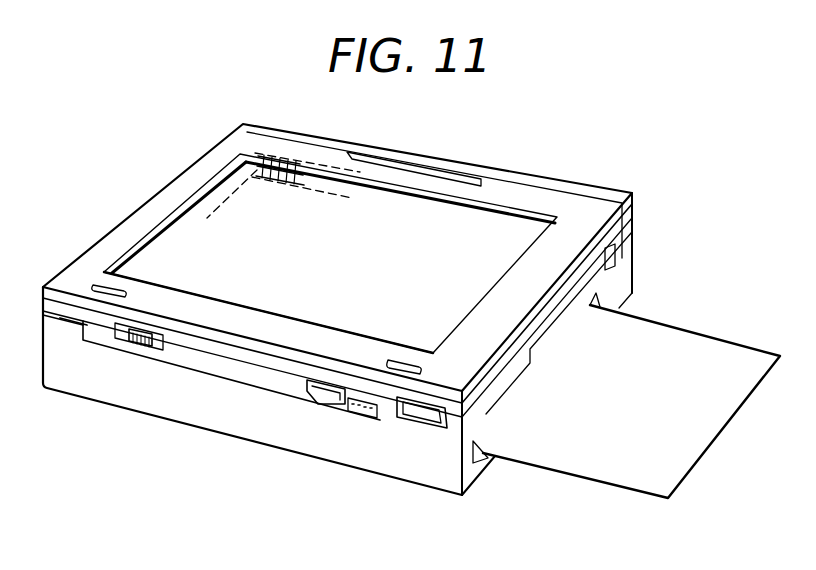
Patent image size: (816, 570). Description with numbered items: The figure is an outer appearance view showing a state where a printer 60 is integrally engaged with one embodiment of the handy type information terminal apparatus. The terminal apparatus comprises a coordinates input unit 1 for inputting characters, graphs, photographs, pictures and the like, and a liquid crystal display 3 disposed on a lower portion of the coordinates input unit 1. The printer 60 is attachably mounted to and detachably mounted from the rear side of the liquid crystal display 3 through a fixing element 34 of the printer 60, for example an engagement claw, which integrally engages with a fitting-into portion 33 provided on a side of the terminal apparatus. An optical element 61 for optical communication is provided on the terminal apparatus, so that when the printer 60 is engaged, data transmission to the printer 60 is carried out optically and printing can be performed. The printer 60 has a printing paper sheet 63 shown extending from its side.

The coordinates input unit 1 is at (402, 212).
The liquid crystal display 3 is at (488, 233).
The fitting-into portion 33 is at (320, 392).
The fixing element 34 is at (347, 415).
The printer 60 is at (165, 385).
The optical element 61 is at (292, 158).
The printing paper sheet 63 is at (657, 473).